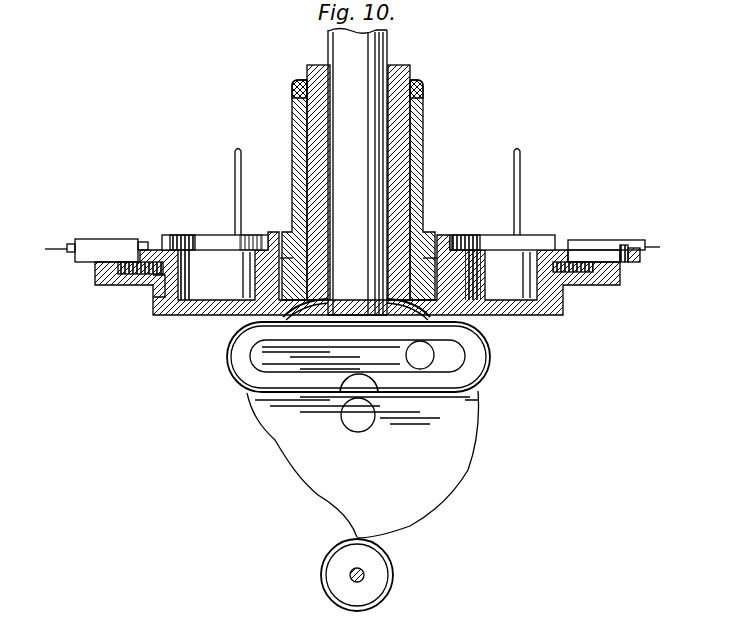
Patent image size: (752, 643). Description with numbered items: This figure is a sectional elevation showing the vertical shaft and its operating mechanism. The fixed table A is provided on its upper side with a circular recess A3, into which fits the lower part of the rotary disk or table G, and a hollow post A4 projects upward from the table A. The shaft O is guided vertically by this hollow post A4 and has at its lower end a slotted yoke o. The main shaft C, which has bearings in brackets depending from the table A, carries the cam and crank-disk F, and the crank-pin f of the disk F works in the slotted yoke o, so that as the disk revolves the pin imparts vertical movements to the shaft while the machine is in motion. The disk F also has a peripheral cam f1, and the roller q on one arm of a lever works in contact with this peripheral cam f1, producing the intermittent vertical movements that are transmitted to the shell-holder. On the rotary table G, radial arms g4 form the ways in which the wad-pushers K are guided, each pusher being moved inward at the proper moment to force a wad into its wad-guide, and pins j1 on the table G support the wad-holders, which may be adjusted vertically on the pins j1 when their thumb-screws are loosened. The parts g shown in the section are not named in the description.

The table A is at (592, 280).
The circular recess A3 is at (517, 303).
The hollow post A4 is at (423, 136).
The collar or sleeve g is at (423, 158).
The radial arms g4 is at (92, 247).
The rotary disk or table G is at (485, 247).
The pin j1 is at (530, 194).
The wad-pusher K is at (350, 248).
The slotted yoke o is at (330, 51).
The crank-pin f is at (412, 355).
The peripheral cam f1 is at (256, 412).
The cam and crank-disk F is at (363, 464).
The main shaft C is at (357, 421).
The roller q is at (335, 567).